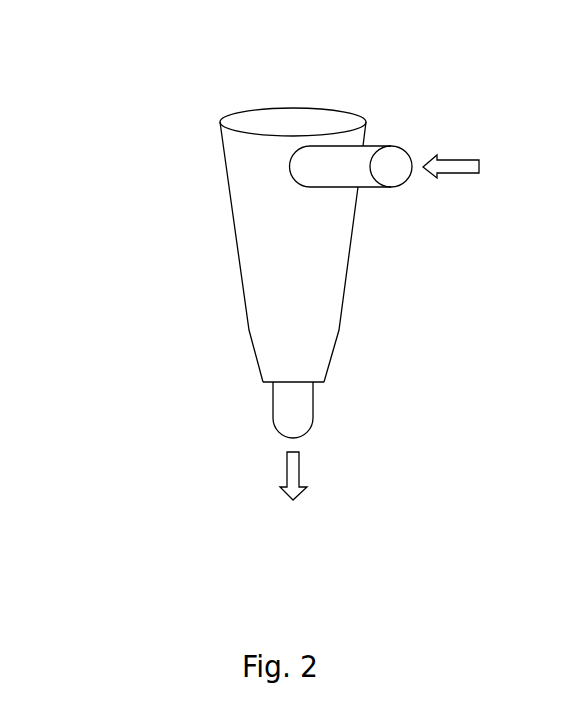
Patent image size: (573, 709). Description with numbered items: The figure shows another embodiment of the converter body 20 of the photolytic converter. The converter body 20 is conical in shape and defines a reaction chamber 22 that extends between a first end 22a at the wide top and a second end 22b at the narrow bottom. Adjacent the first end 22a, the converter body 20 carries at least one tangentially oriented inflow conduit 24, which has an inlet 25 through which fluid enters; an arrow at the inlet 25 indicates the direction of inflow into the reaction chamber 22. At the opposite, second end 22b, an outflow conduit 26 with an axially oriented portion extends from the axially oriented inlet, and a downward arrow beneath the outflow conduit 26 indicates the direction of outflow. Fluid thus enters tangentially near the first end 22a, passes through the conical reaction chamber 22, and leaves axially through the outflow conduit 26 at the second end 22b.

The converter body 20 is at (210, 101).
The reaction chamber 22 is at (312, 260).
The first end 22a is at (328, 118).
The second end 22b is at (263, 383).
The tangentially oriented inflow conduit 24 is at (378, 187).
The inlet 25 is at (398, 158).
The outlet tip 26 is at (313, 403).